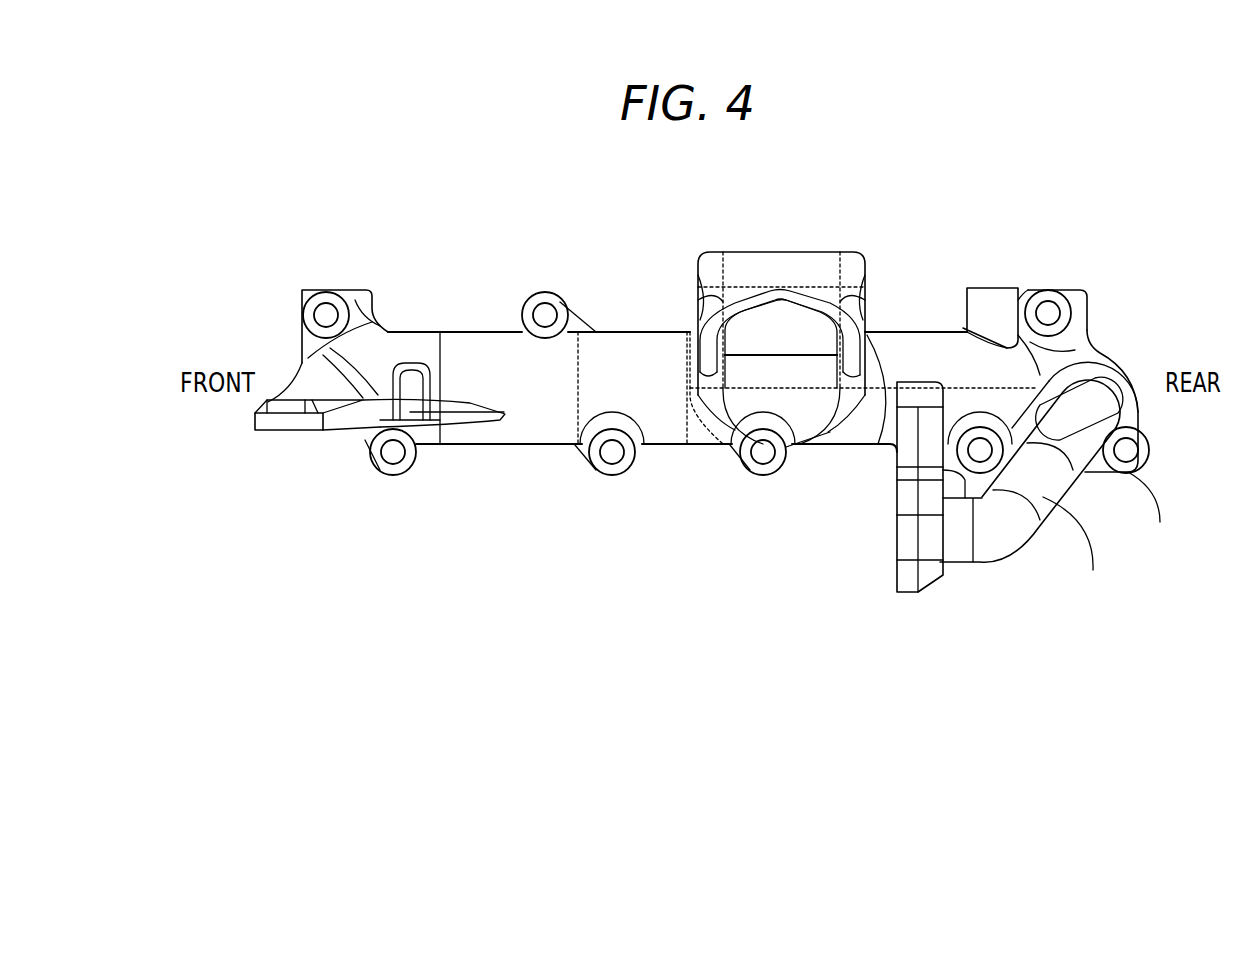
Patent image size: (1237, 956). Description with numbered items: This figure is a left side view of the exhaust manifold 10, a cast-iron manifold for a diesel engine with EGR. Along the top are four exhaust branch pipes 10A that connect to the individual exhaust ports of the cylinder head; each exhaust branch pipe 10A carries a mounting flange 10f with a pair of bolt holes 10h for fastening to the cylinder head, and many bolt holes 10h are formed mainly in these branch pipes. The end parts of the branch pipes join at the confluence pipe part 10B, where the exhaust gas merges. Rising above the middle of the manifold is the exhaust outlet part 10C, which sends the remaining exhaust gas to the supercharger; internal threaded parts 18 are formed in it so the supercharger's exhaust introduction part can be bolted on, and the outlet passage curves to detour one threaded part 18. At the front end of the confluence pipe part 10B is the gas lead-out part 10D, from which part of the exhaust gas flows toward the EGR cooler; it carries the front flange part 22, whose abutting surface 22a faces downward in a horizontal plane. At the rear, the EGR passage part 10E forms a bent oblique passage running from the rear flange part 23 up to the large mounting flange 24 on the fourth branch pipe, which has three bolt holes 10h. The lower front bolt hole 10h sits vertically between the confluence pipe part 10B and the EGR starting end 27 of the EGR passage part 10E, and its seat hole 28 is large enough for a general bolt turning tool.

The exhaust manifold 10 is at (472, 253).
The exhaust branch pipe 10A is at (1043, 368).
The confluence pipe part 10B is at (662, 417).
The exhaust outlet part 10C is at (818, 265).
The gas lead-out part 10D is at (298, 385).
The EGR passage part 10E is at (1042, 497).
The mounting flange 10f is at (360, 308).
The bolt hole 10h is at (320, 305).
The internal threaded part 18 is at (703, 270).
The front flange part 22 is at (302, 440).
The abutting surface 22a is at (312, 440).
The rear flange part 23 is at (903, 567).
The large mounting flange 24 is at (1088, 318).
The EGR starting end 27 is at (960, 545).
The seat hole 28 is at (958, 395).